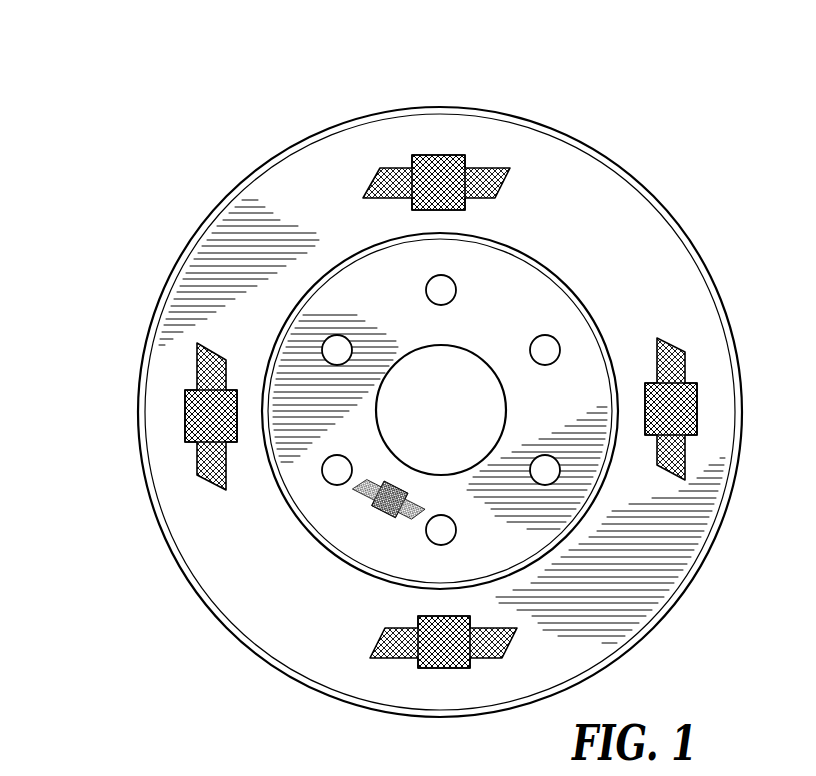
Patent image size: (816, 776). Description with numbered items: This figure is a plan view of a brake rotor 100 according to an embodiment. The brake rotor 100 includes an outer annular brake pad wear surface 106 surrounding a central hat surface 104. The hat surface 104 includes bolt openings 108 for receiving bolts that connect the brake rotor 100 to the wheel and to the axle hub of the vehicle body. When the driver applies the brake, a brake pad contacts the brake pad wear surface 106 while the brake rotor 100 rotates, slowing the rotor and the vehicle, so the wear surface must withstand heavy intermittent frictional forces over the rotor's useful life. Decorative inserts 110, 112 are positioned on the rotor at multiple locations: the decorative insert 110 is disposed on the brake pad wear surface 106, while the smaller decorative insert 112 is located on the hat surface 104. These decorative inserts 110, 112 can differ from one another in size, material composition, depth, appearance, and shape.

The brake rotor 100 is at (152, 120).
The hat surface 104 is at (525, 287).
The brake pad wear surface 106 is at (287, 197).
The bolt openings 108 is at (548, 350).
The decorative insert 110 is at (492, 167).
The decorative insert 112 is at (372, 513).